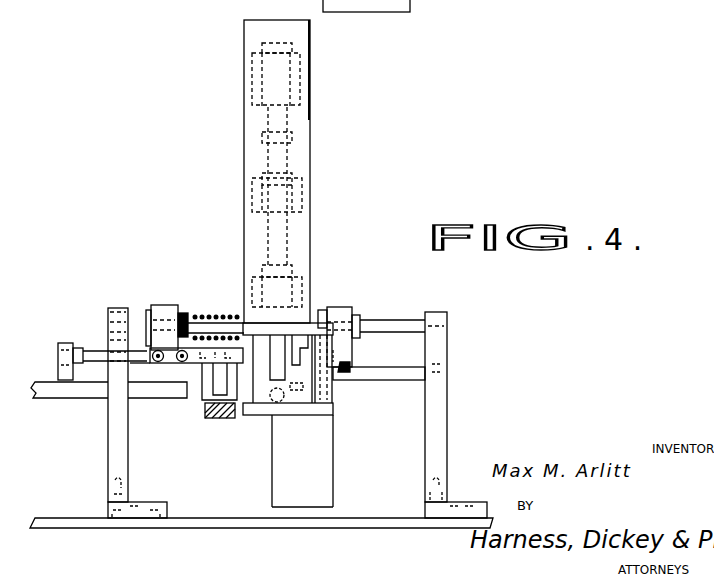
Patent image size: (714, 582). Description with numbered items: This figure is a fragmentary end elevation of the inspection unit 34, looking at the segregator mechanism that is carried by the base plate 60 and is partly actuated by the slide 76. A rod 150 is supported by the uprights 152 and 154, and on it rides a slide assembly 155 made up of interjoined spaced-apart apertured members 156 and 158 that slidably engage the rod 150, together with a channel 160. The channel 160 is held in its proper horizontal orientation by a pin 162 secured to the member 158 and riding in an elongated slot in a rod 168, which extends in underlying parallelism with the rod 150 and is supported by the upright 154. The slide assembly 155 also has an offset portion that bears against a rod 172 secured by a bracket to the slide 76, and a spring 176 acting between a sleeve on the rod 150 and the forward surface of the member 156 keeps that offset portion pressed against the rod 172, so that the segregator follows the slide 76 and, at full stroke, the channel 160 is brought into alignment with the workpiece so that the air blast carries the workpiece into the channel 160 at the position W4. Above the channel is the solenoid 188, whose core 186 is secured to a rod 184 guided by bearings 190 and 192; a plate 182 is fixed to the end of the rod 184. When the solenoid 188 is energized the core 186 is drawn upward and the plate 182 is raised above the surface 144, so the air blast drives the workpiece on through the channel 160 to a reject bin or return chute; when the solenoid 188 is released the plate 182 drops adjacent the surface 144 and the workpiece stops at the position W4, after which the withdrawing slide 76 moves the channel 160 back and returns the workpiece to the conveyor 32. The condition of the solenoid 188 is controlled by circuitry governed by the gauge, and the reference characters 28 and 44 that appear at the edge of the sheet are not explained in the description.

The upper member 28 is at (283, 6).
The upper housing 44 is at (384, 6).
The inspection unit 34 is at (349, 175).
The solenoid 188 is at (298, 79).
The core 186 is at (292, 118).
The bearing 190 is at (310, 193).
The bearing 192 is at (310, 287).
The apertured member 158 is at (348, 307).
The pin 162 is at (353, 368).
The rod 168 is at (380, 376).
The upright 154 is at (440, 392).
The surface 144 is at (275, 362).
The plate 182 is at (252, 403).
The workpiece position W4 is at (323, 418).
The base plate 60 is at (373, 527).
The rod 150 is at (135, 320).
The upright 152 is at (110, 462).
The slide assembly 155 is at (122, 404).
The slide 76 is at (62, 393).
The rod 172 is at (92, 348).
The apertured member 156 is at (165, 305).
The spring 176 is at (203, 315).
The channel 160 is at (166, 366).
The conveyor 32 is at (203, 411).
The rod 184 is at (219, 424).